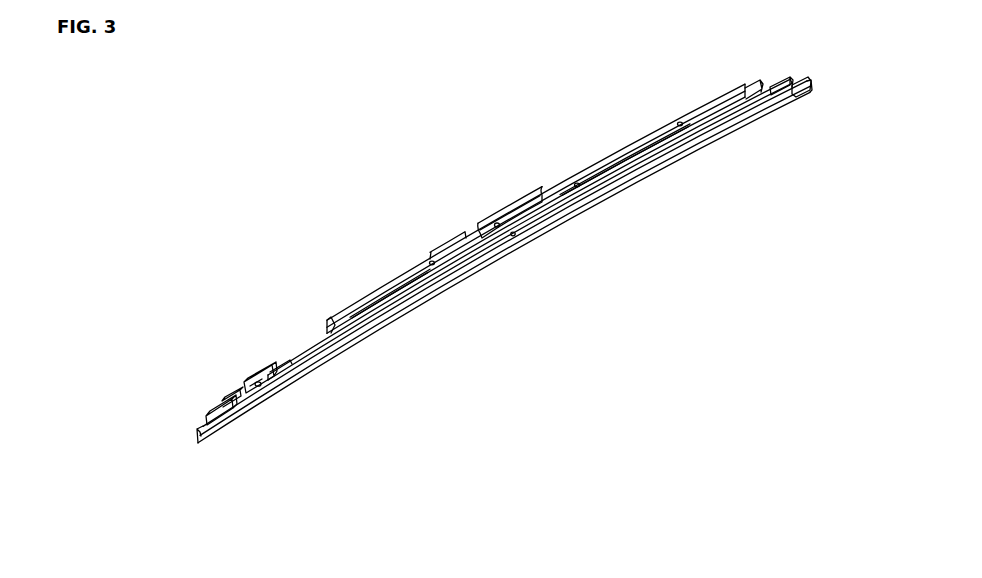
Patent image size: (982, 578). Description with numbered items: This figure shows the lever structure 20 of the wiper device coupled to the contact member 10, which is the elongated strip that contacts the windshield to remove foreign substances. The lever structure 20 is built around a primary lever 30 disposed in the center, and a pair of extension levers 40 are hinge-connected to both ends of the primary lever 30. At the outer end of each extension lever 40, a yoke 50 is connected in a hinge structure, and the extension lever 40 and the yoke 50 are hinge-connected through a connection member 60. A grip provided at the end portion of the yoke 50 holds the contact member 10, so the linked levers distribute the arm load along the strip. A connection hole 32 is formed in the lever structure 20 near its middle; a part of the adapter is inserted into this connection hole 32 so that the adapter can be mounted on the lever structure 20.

The contact member 10 is at (243, 423).
The lever structure 20 is at (317, 222).
The primary lever 30 is at (345, 318).
The connection hole 32 is at (497, 220).
The extension lever 40 is at (288, 363).
The yoke 50 is at (213, 408).
The connection member 60 is at (252, 380).